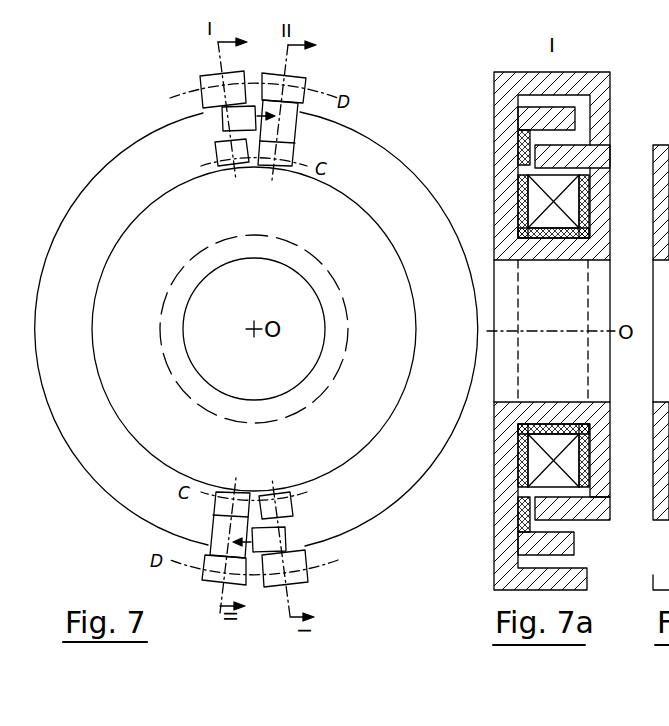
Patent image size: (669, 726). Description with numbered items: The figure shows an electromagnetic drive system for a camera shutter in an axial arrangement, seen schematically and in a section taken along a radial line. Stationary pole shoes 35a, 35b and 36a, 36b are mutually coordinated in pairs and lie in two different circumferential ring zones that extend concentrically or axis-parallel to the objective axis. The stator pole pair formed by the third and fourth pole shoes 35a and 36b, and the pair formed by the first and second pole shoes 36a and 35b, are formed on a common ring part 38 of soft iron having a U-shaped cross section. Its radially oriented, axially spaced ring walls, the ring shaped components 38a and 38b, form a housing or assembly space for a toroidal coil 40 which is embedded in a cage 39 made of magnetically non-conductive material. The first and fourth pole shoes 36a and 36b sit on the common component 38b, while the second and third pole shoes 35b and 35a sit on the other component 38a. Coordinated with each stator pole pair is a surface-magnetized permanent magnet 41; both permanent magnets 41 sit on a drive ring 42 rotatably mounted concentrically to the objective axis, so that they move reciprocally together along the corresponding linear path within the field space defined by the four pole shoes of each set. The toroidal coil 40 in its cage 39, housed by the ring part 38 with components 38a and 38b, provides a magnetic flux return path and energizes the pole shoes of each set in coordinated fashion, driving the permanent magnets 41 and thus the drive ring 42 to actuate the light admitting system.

In FIG. 7, the third pole shoe 35a is at (200, 84).
In FIG. 7A, the third pole shoe 35a is at (566, 82).
In FIG. 7, the second pole shoe 35b is at (294, 158).
In FIG. 7, the first pole shoe 36a is at (306, 83).
In FIG. 7, the fourth pole shoe 36b is at (216, 157).
In FIG. 7A, the fourth pole shoe 36b is at (572, 155).
In FIG. 7A, the ring part 38 is at (550, 251).
In FIG. 7A, the ring shaped component 38a is at (506, 222).
In FIG. 7, the ring shaped component 38b is at (337, 450).
In FIG. 7A, the ring shaped component 38b is at (596, 258).
In FIG. 7A, the cage 39 is at (518, 190).
In FIG. 7A, the toroidal coil 40 is at (557, 190).
In FIG. 7, the permanent magnet 41 is at (249, 112).
In FIG. 7A, the permanent magnet 41 is at (565, 118).
In FIG. 7, the drive ring 42 is at (148, 157).
In FIG. 7A, the drive ring 42 is at (521, 154).